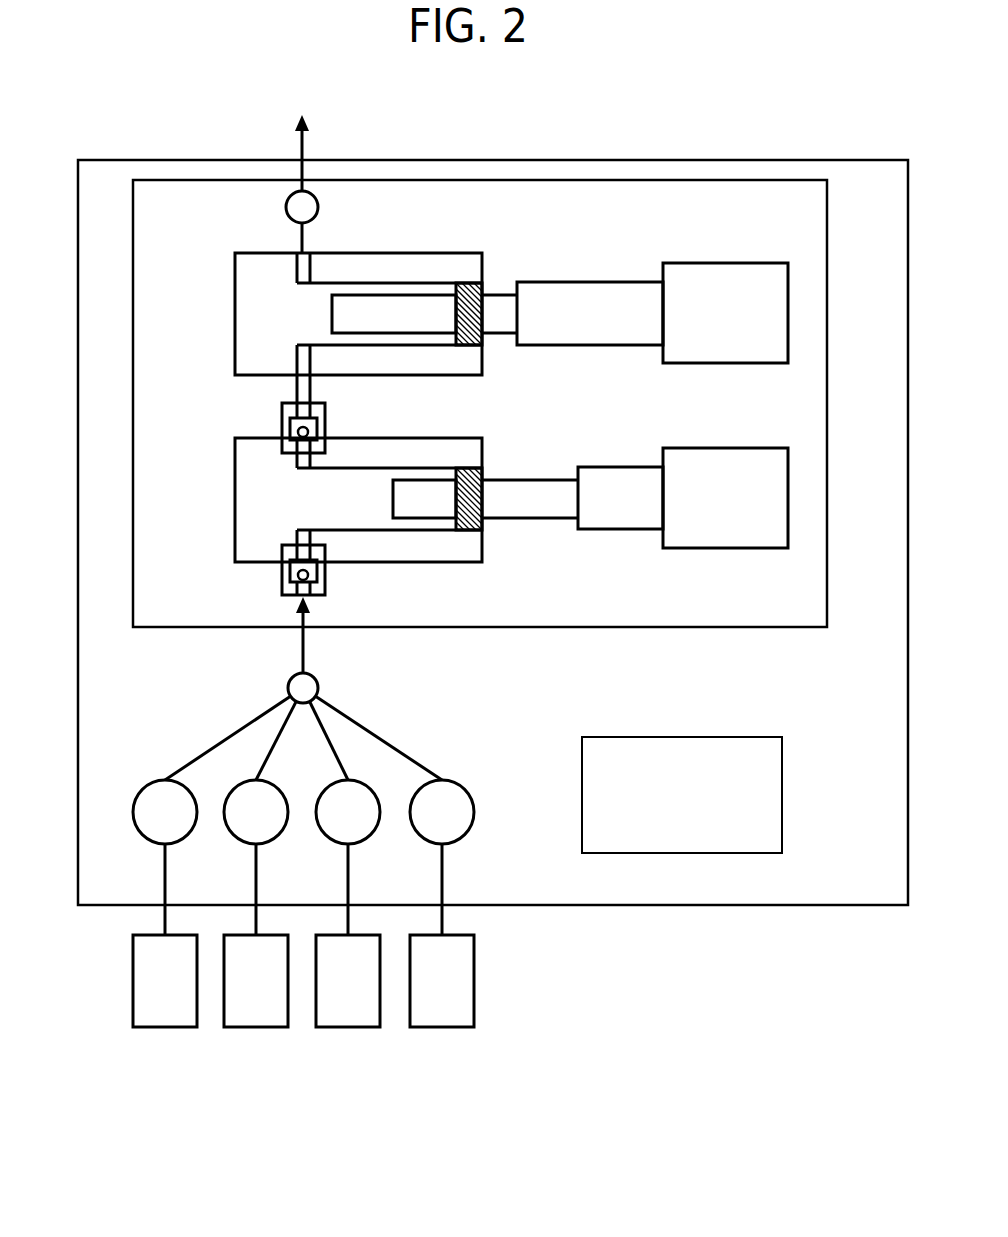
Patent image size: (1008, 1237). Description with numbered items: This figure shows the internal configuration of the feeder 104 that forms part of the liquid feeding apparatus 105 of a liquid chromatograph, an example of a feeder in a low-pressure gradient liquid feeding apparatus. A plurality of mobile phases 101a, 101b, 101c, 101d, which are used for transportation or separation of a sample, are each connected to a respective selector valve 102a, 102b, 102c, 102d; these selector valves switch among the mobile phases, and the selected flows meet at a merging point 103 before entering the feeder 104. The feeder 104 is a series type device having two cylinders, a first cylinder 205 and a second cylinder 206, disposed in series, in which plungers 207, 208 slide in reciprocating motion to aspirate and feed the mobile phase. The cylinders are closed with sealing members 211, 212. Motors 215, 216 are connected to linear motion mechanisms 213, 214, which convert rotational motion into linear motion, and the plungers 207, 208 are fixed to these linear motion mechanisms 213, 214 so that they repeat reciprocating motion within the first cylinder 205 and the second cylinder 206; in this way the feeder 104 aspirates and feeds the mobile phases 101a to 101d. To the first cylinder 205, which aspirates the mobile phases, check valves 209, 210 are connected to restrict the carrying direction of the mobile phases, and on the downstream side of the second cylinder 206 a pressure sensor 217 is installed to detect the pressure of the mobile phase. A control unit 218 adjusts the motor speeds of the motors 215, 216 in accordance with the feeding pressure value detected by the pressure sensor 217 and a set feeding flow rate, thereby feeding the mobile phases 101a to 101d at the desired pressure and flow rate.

The mobile phase 101a is at (168, 1018).
The mobile phase 101b is at (260, 1018).
The mobile phase 101c is at (352, 1018).
The mobile phase 101d is at (446, 1018).
The selector valve 102a is at (160, 838).
The selector valve 102b is at (251, 838).
The selector valve 102c is at (343, 838).
The selector valve 102d is at (436, 838).
The merging point 103 is at (293, 677).
The feeder 104 is at (540, 628).
The liquid feeding apparatus 105 is at (78, 598).
The first cylinder 205 is at (244, 472).
The second cylinder 206 is at (244, 285).
The plunger 207 is at (500, 492).
The plunger 208 is at (490, 292).
The check valve 209 is at (320, 570).
The check valve 210 is at (320, 430).
The sealing member 211 is at (482, 522).
The sealing member 212 is at (483, 334).
The linear motion mechanism 213 is at (587, 473).
The linear motion mechanism 214 is at (585, 292).
The motor 215 is at (703, 458).
The motor 216 is at (703, 277).
The pressure sensor 217 is at (318, 207).
The control unit 218 is at (672, 737).